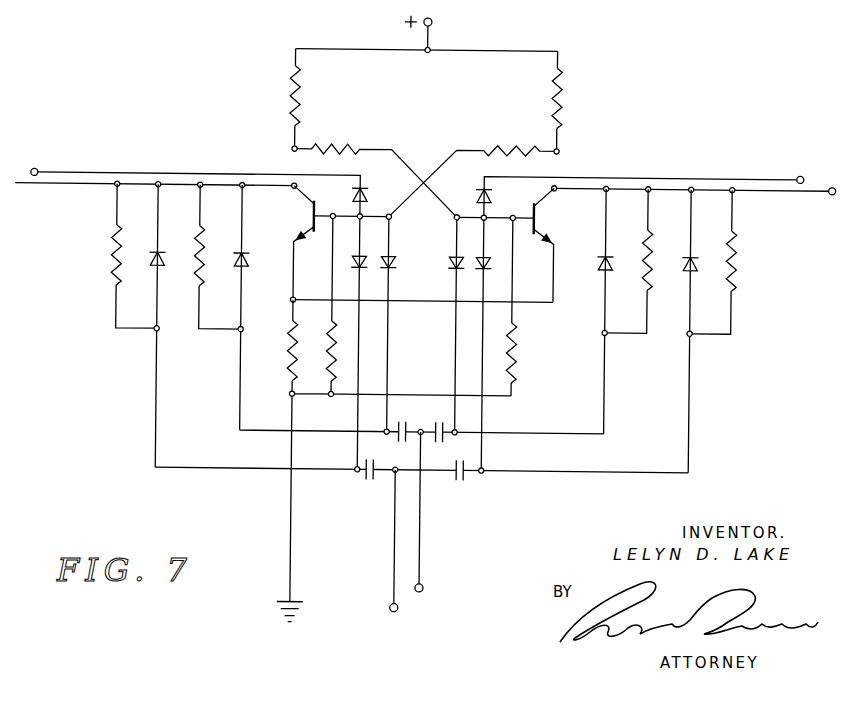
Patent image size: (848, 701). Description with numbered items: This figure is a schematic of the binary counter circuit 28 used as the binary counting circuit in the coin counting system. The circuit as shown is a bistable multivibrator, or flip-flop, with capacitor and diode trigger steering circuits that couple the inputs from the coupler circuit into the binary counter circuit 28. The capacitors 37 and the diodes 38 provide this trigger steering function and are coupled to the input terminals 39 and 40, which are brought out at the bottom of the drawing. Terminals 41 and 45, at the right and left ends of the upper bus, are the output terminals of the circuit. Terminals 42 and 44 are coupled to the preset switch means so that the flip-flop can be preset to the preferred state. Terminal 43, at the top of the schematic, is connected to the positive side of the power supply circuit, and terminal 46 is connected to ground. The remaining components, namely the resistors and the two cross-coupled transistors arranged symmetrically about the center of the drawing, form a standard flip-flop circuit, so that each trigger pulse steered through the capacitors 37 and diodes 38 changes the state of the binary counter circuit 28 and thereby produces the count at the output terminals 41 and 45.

The binary counter circuit 28 is at (424, 318).
The capacitor 37 is at (460, 460).
The diodes 38 is at (155, 252).
The input terminal 39 is at (380, 541).
The input terminal 40 is at (430, 523).
The output terminal 41 is at (829, 191).
The terminal 42 is at (796, 173).
The terminal 43 is at (430, 22).
The terminal 44 is at (196, 163).
The output terminal 45 is at (16, 189).
The terminal 46 is at (276, 601).